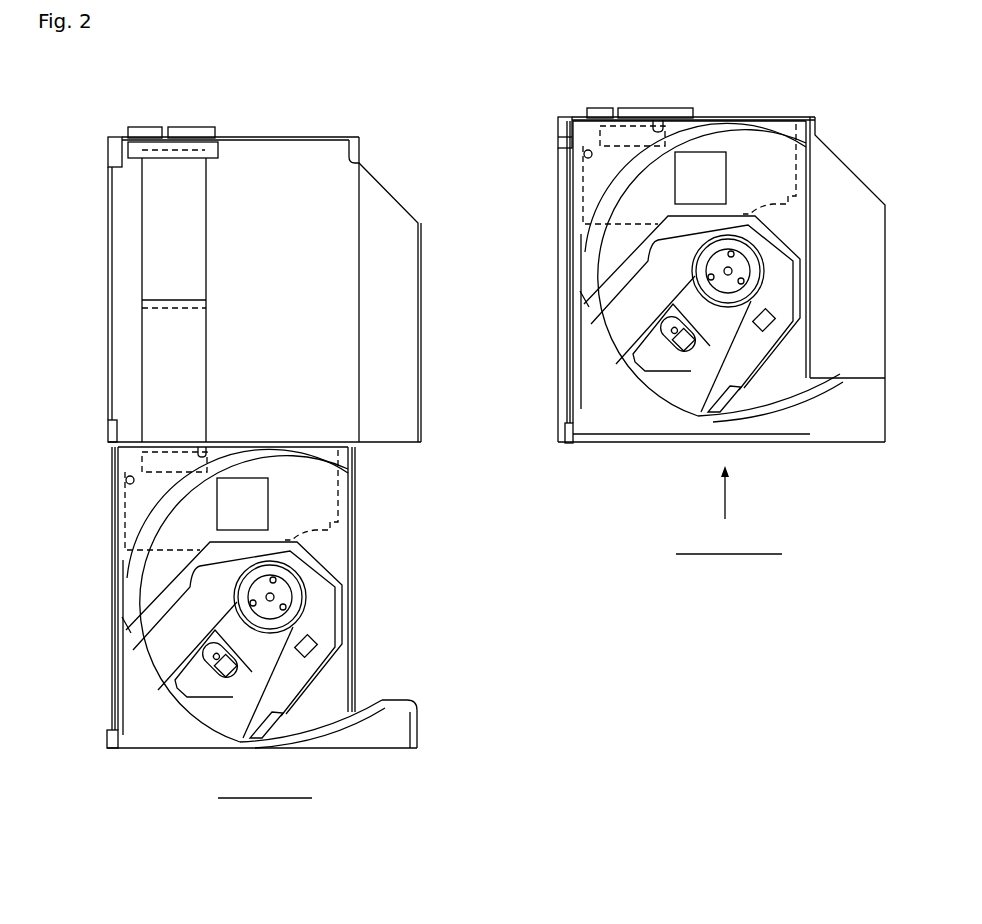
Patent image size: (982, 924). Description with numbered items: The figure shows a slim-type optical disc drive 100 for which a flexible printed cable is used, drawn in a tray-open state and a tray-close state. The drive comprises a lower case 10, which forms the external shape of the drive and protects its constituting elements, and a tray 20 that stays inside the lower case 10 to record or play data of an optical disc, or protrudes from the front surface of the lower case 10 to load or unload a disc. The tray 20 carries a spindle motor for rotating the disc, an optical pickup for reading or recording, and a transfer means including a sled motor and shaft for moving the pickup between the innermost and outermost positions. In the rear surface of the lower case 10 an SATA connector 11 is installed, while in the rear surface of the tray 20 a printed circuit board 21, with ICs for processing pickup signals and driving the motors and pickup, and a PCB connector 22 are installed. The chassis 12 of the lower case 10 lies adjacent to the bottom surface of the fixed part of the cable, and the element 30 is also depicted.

The slim-type optical disc drive 100 is at (372, 92).
The lower case 10 is at (260, 284).
The SATA connector 11 is at (136, 152).
The chassis 12 is at (118, 297).
The tray 20 is at (234, 597).
The printed circuit board 21 is at (120, 510).
The PCB connector 22 is at (142, 463).
The slide member 30 is at (222, 268).